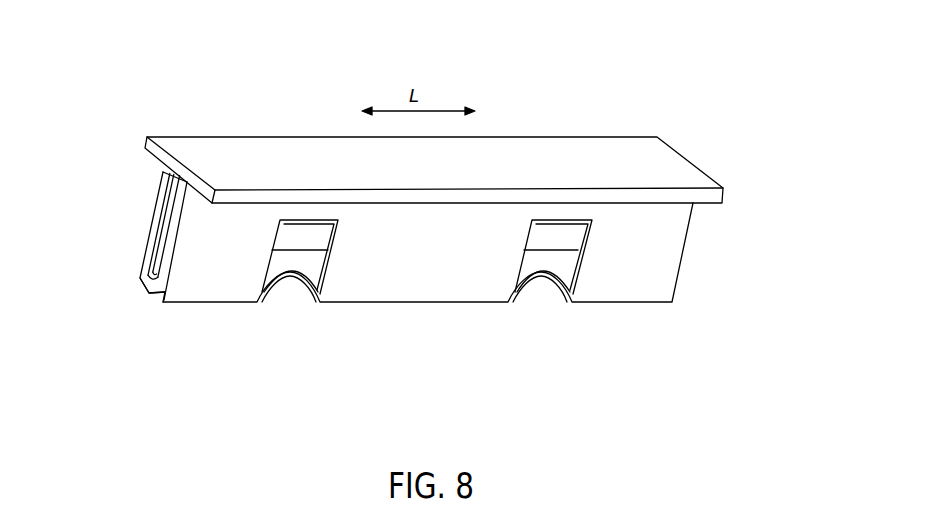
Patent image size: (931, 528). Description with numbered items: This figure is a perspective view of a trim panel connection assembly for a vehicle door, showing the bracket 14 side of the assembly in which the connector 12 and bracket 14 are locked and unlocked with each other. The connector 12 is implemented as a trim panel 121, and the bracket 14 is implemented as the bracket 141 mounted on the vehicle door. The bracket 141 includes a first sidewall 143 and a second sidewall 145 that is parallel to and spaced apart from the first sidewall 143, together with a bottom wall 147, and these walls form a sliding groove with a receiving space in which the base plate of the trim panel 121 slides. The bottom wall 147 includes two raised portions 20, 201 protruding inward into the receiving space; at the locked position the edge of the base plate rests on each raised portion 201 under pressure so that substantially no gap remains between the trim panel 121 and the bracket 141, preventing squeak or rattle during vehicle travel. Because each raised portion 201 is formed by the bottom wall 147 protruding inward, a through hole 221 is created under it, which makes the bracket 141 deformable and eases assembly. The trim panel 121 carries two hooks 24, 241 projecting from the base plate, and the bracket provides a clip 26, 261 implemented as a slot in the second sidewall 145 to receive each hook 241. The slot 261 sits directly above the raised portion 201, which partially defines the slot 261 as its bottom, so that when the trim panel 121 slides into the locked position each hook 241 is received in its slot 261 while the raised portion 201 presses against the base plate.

The connector 12 is at (434, 144).
The trim panel 121 is at (622, 153).
The bracket 14 is at (425, 262).
The bracket 141 is at (425, 262).
The first sidewall 143 is at (150, 237).
The second sidewall 145 is at (160, 275).
The bottom wall 147 is at (148, 292).
The raised portion 20 is at (344, 286).
The raised portion 201 is at (344, 286).
The through hole 221 is at (285, 297).
The hook 24 is at (608, 255).
The hook 241 is at (582, 242).
The clip 26 is at (597, 278).
The clip 261 is at (597, 278).